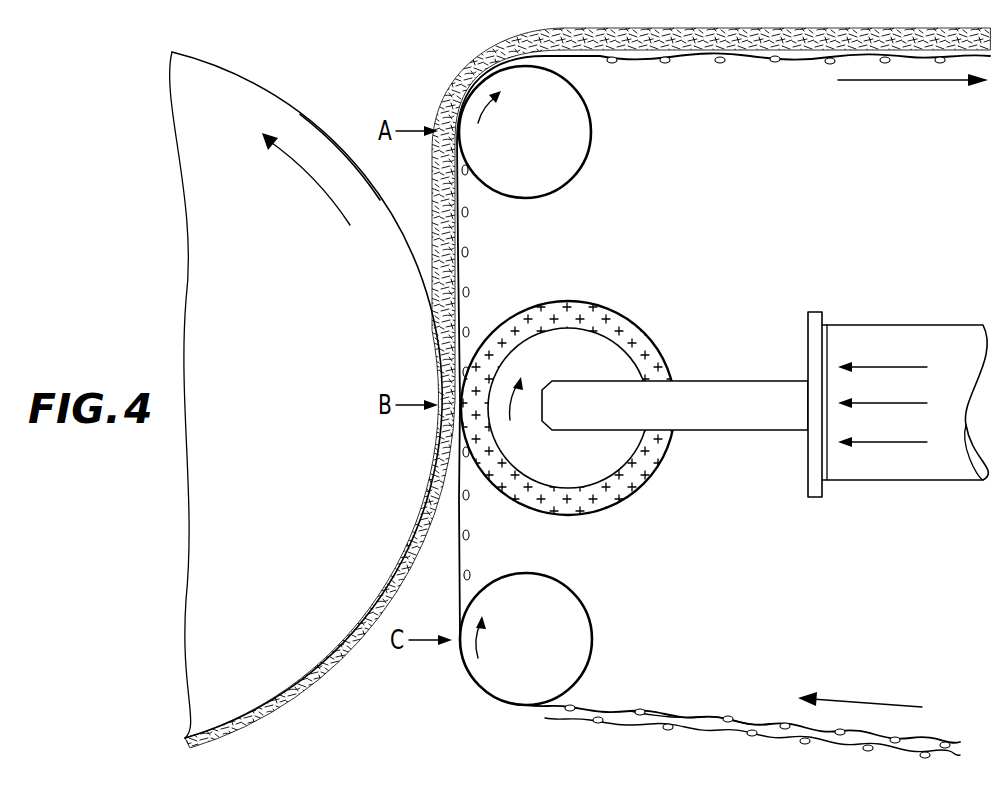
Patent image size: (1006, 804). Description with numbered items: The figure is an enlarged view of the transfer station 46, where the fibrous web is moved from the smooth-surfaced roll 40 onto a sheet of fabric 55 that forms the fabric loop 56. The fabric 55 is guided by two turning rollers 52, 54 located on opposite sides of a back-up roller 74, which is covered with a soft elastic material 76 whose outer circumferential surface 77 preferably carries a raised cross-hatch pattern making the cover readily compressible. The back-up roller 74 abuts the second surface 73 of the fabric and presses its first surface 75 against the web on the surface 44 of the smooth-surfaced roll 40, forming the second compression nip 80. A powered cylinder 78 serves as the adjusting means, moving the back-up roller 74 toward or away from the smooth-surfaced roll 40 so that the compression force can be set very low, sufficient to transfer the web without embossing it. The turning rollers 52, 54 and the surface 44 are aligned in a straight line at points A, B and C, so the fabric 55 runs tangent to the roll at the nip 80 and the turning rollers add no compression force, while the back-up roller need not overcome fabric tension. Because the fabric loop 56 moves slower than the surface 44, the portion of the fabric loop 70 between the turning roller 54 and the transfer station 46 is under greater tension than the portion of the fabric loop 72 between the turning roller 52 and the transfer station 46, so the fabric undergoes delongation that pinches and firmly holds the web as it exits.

The smooth-surfaced roll 40 is at (252, 112).
The surface of smooth-surfaced roll 44 is at (333, 144).
The transfer station 46 is at (423, 373).
The turning roller 52 is at (587, 137).
The turning roller 54 is at (573, 608).
The fabric 55 is at (657, 717).
The fabric loop 56 is at (706, 708).
The portion of the fabric loop 70 is at (467, 541).
The portion of the fabric loop 72 is at (476, 262).
The second surface of the fabric material 73 is at (750, 717).
The back-up roller 74 is at (612, 342).
The first surface of the fabric material 75 is at (753, 732).
The soft elastic material 76 is at (593, 305).
The outer circumferential surface 77 is at (660, 345).
The powered cylinder 78 is at (930, 337).
The second compression nip 80 is at (457, 408).